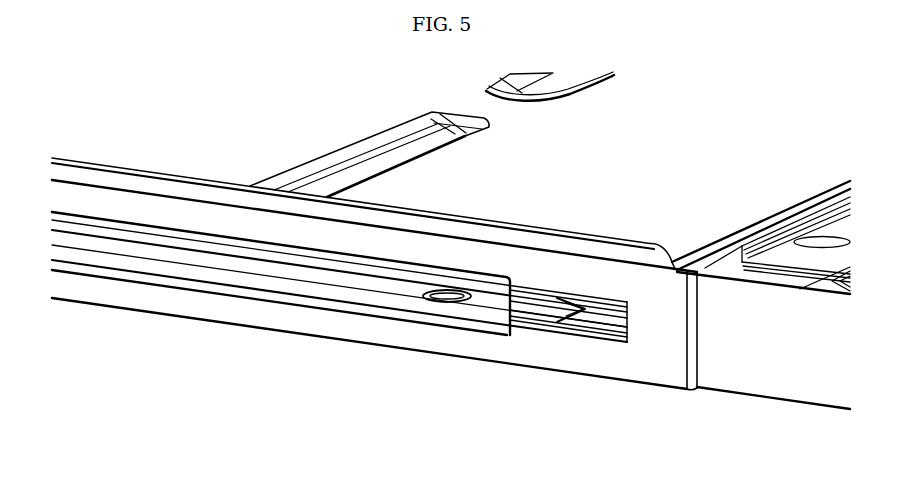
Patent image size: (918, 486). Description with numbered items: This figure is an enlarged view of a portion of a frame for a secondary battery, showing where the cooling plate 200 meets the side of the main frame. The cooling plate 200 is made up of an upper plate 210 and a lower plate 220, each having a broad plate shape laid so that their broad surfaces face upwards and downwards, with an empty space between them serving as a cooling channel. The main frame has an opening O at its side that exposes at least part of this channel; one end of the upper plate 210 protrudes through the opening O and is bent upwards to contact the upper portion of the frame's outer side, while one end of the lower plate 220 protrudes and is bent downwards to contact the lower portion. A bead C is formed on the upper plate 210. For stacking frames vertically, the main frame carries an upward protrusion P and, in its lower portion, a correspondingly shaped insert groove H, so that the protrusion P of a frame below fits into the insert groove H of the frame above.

The protrusion P is at (602, 247).
The bead C is at (505, 99).
The opening O is at (150, 257).
The cooling plate 200 is at (339, 323).
The upper plate 210 is at (303, 257).
The lower plate 220 is at (330, 293).
The insert groove H is at (573, 394).